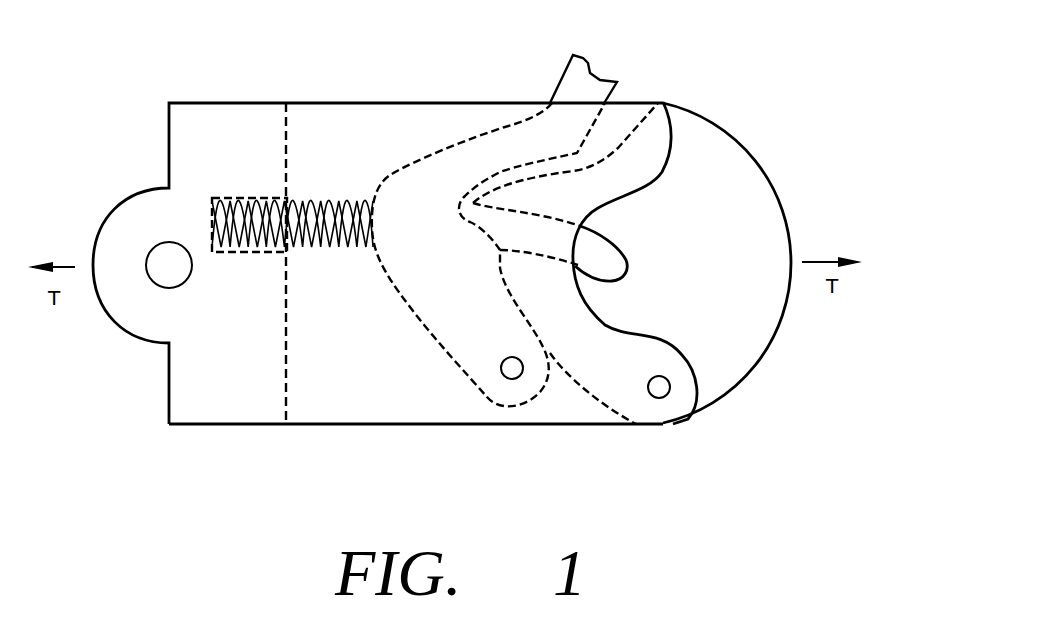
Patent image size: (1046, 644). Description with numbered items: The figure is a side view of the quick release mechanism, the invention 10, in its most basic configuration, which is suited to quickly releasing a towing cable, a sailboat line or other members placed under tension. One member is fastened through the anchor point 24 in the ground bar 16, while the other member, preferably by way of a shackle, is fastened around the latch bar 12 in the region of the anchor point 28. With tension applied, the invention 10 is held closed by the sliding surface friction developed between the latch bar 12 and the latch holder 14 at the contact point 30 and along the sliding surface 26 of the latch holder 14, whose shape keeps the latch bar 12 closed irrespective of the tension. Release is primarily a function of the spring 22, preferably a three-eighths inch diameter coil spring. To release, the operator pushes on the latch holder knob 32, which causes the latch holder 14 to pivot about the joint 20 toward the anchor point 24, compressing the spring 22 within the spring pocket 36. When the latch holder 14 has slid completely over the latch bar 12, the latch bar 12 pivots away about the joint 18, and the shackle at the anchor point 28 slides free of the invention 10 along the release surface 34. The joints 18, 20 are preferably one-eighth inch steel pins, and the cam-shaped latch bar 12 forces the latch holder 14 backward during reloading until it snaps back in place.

The invention 10 is at (537, 25).
The latch bar 12 is at (742, 177).
The latch holder 14 is at (430, 300).
The ground bar 16 is at (405, 414).
The joint 18 is at (660, 398).
The joint 20 is at (514, 379).
The spring 22 is at (299, 248).
The anchor point 24 is at (180, 270).
The sliding surface 26 is at (550, 163).
The anchor point 28 is at (605, 270).
The contact point 30 is at (478, 187).
The latch holder knob 32 is at (605, 78).
The release surface 34 is at (522, 207).
The spring pocket 36 is at (246, 198).